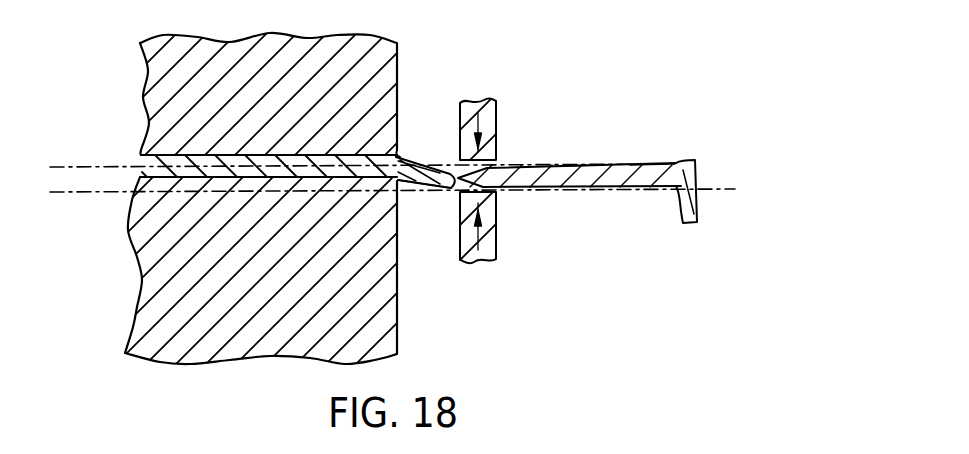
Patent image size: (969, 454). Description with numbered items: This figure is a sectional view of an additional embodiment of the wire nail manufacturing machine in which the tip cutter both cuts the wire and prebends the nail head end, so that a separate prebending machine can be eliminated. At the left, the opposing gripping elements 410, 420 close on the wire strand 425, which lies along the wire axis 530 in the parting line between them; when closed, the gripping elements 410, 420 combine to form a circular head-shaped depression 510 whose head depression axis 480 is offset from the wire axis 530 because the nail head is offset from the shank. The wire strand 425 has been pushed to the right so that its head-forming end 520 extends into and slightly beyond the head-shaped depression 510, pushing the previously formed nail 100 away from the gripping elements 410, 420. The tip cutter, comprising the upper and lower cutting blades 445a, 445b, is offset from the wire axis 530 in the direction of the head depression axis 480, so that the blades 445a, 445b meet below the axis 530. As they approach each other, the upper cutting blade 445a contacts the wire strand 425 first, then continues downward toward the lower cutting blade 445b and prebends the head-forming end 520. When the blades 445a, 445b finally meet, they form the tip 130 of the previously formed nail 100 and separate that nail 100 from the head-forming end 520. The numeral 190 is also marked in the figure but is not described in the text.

The gripping element 420 is at (170, 83).
The wire strand 425 is at (141, 156).
The gripping element 410 is at (150, 293).
The slot edge corner 190 is at (400, 150).
The head-forming end 520 is at (443, 166).
The head-shaped depression 510 is at (406, 190).
The upper cutting blade 445a is at (490, 107).
The lower cutting blade 445b is at (488, 218).
The tip 130 is at (478, 178).
The axis of the wire strand 530 is at (573, 166).
The nail 100 is at (646, 165).
The head depression axis 480 is at (651, 188).